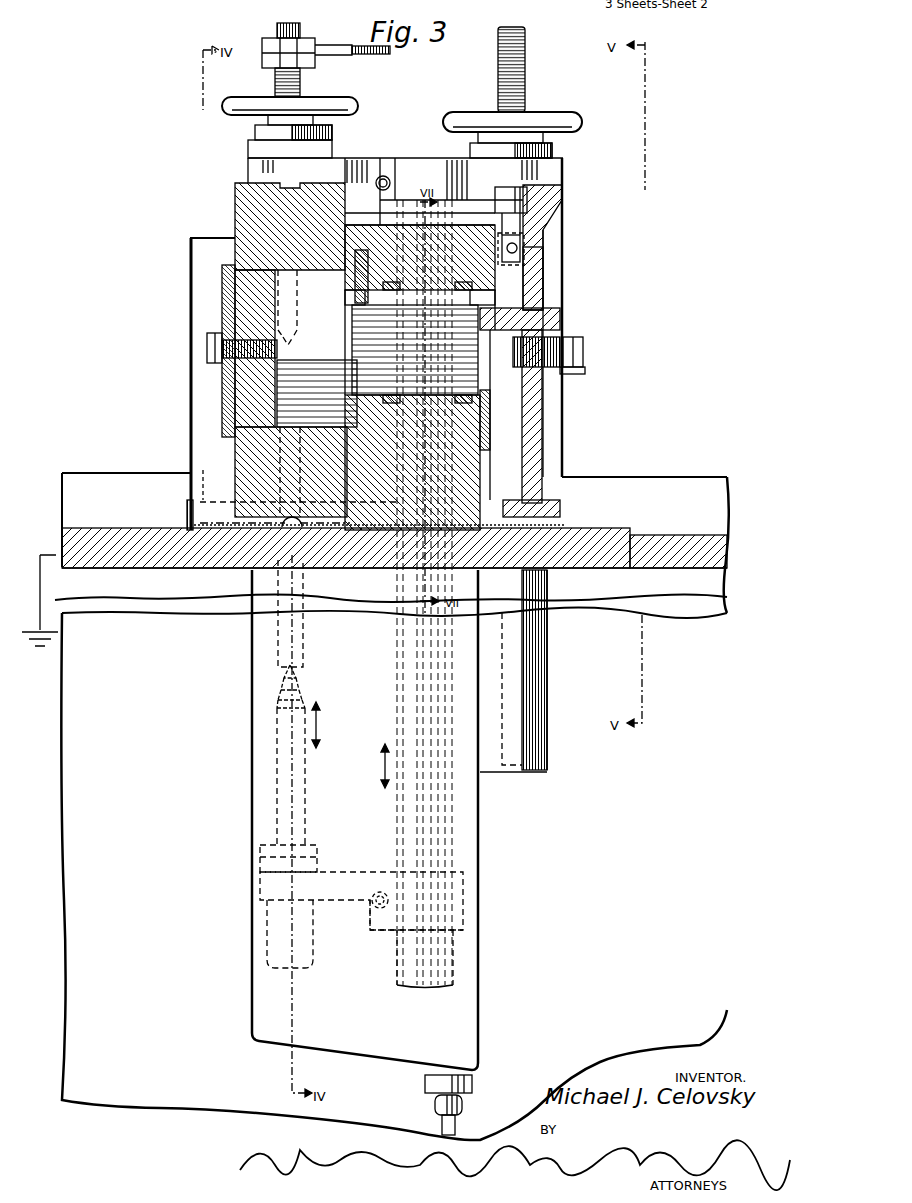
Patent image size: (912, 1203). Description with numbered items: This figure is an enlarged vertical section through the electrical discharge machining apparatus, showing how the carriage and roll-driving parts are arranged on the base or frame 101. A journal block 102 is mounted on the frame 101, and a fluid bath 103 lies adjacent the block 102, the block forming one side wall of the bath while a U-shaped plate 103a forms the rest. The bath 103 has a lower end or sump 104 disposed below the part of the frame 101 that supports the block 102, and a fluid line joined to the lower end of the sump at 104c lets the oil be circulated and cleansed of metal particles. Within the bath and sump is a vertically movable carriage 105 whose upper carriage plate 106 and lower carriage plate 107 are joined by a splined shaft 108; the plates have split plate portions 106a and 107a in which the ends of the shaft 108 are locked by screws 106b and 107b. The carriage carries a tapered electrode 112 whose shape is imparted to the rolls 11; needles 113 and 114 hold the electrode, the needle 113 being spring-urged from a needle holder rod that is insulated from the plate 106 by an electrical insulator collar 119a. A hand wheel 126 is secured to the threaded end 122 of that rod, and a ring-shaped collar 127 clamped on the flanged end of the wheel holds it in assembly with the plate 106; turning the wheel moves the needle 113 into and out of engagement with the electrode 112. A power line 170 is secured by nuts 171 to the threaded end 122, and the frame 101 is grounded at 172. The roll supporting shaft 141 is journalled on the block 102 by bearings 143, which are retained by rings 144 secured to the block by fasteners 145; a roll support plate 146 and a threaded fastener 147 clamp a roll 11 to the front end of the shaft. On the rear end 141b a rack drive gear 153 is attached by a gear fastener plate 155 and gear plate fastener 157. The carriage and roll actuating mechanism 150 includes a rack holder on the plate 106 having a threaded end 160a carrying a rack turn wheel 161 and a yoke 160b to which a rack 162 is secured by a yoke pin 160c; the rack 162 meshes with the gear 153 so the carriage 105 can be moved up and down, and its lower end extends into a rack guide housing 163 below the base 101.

The roll 11 is at (246, 212).
The base or frame 101 is at (712, 553).
The journal block 102 is at (470, 512).
The fluid bath 103 is at (215, 458).
The U-shaped plate 103a is at (190, 438).
The sump 104 is at (265, 695).
The sump fluid line connection 104c is at (434, 1103).
The carriage 105 is at (244, 165).
The upper carriage plate 106 is at (346, 163).
The split plate portion 106a is at (416, 183).
The fastener or screw 106b is at (390, 178).
The lower carriage plate 107 is at (262, 893).
The split plate portion 107a is at (418, 916).
The fastener or screw 107b is at (380, 890).
The splined shaft 108 is at (448, 843).
The electrode 112 is at (277, 652).
The needle 113 is at (296, 303).
The needle 114 is at (306, 768).
The bushing electrical insulator collar 119a is at (249, 147).
The threaded end of needle holder rod 122 is at (301, 88).
The hand wheel 126 is at (357, 110).
The ring-shaped collar 127 is at (256, 128).
The roll supporting shaft 141 is at (375, 333).
The rear end of shaft 141b is at (494, 333).
The bearing 143 is at (476, 396).
The ring 144 is at (358, 250).
The fastener 145 is at (355, 258).
The roll support plate 146 is at (240, 295).
The fastener 147 is at (213, 351).
The carriage and roll actuating mechanism 150 is at (603, 283).
The rack drive gear 153 is at (545, 212).
The gear fastener plate 155 is at (566, 383).
The gear plate fastener 157 is at (584, 353).
The threaded end of rack holder 160a is at (526, 80).
The yoke 160b is at (512, 222).
The yoke pin 160c is at (510, 246).
The rack turn wheel 161 is at (580, 123).
The rack 162 is at (528, 270).
The rack guide housing 163 is at (548, 771).
The power line 170 is at (381, 60).
The nut 171 is at (303, 48).
The ground 172 is at (38, 592).